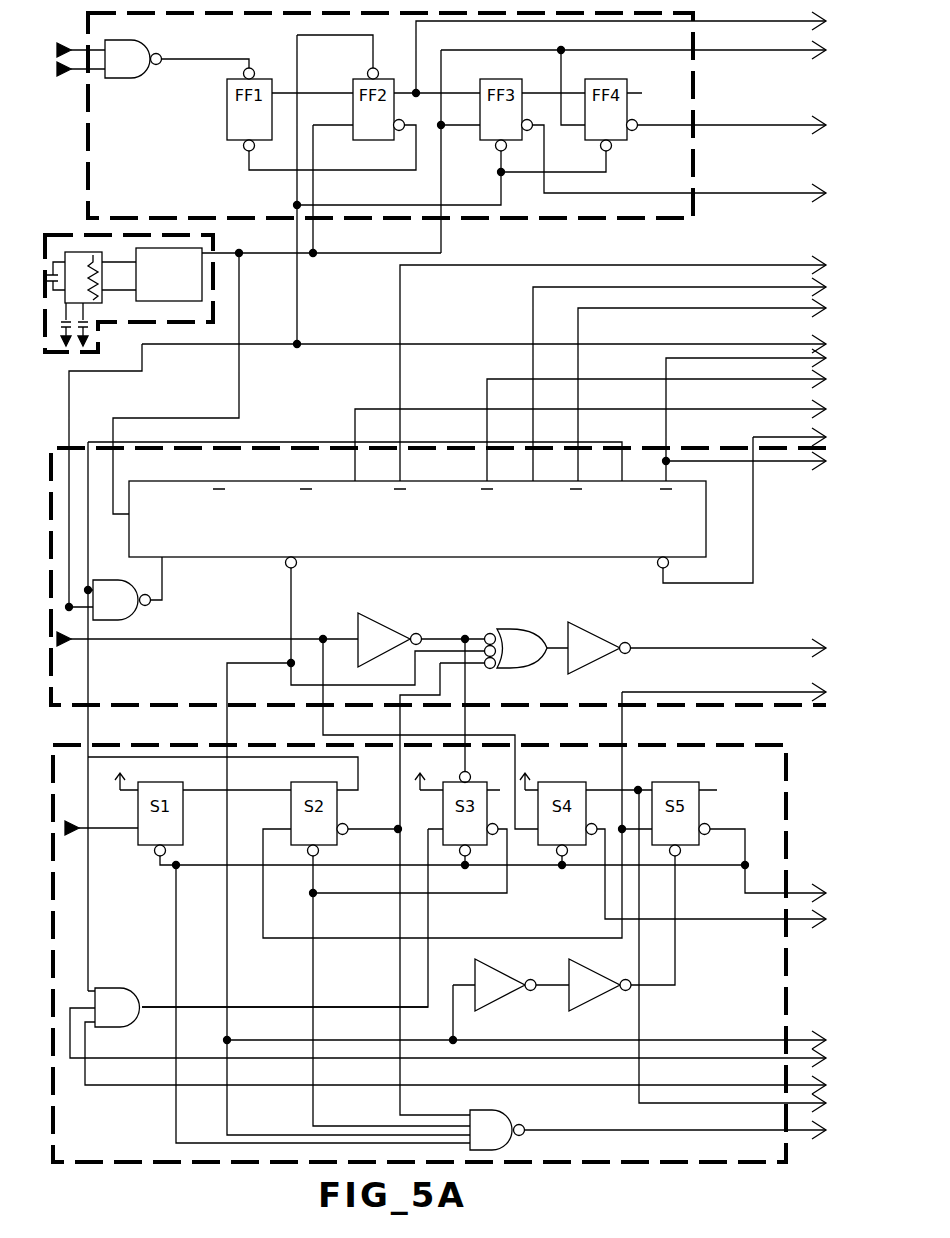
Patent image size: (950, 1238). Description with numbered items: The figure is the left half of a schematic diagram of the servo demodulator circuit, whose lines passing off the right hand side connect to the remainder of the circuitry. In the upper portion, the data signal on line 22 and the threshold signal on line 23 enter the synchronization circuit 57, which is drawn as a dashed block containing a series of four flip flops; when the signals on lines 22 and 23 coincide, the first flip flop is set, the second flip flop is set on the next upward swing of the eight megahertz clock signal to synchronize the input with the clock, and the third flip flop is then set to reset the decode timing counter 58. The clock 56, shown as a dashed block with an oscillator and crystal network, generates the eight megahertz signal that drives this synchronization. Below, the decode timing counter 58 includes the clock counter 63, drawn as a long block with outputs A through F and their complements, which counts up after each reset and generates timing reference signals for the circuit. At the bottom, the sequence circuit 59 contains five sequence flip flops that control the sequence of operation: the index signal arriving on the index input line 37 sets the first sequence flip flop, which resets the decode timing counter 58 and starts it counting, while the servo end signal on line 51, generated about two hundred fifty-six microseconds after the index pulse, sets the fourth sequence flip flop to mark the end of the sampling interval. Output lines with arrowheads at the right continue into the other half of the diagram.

The line 22 is at (86, 50).
The line 23 is at (80, 73).
The synchronization circuit 57 is at (89, 137).
The clock 56 is at (84, 235).
The decode timing counter 58 is at (69, 448).
The clock counter 63 is at (468, 552).
The line 51 is at (72, 646).
The sequence circuit 59 is at (103, 748).
The index input line 37 is at (81, 835).